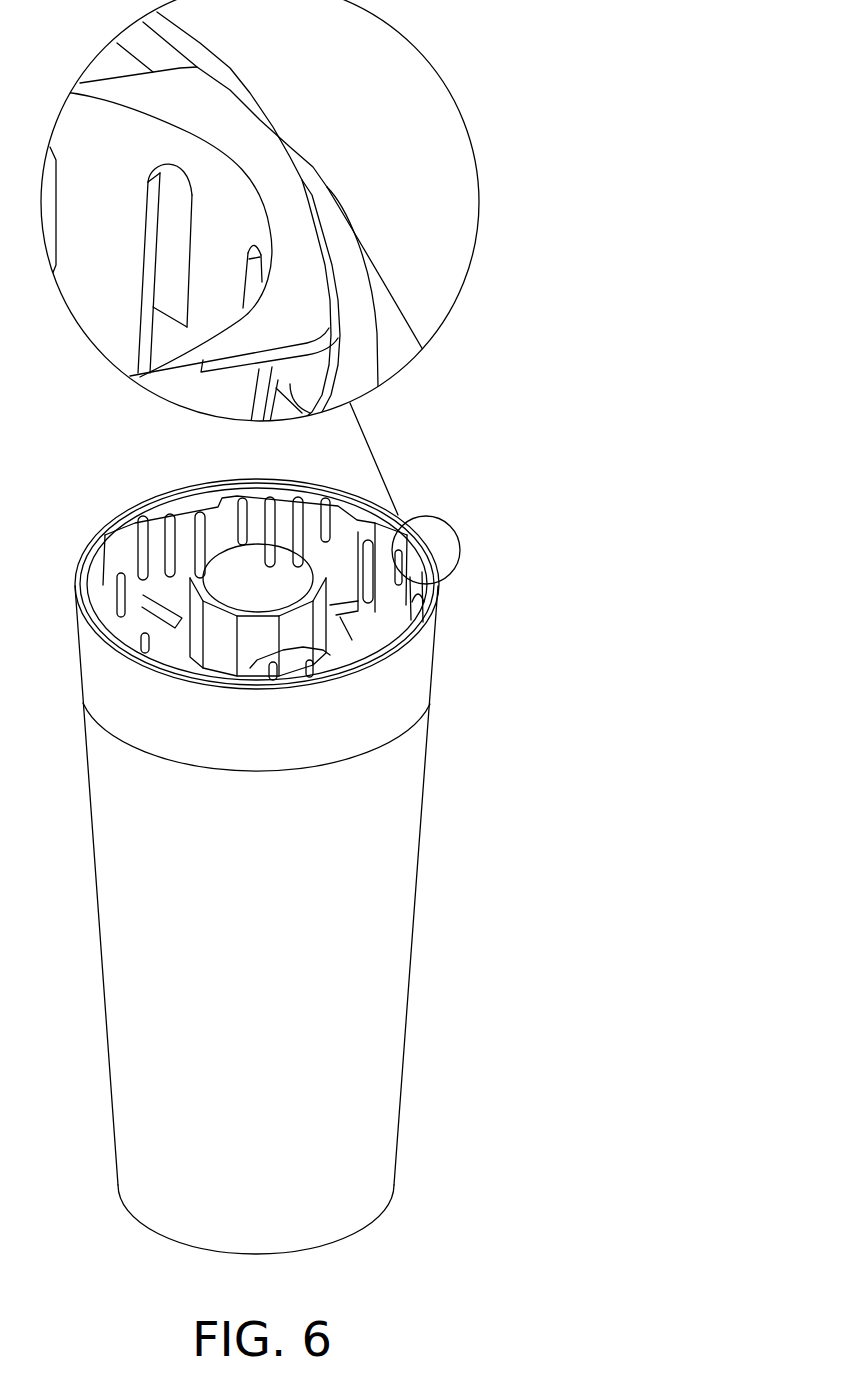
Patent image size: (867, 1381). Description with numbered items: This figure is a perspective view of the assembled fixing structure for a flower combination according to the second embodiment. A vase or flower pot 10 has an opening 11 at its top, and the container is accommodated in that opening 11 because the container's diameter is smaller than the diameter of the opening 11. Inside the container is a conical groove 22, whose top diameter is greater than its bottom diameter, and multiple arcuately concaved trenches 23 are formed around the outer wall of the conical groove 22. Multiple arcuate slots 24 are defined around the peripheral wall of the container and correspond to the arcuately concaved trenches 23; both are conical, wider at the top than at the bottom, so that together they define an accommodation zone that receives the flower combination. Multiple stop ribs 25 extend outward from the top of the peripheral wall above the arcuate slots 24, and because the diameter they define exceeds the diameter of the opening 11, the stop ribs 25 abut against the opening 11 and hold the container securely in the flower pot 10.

The flower pot 10 is at (404, 1007).
The opening 11 is at (429, 470).
The conical groove 22 is at (227, 585).
The arcuately concaved trenches 23 is at (222, 547).
The arcuate slots 24 is at (390, 540).
The stop ribs 25 is at (282, 205).